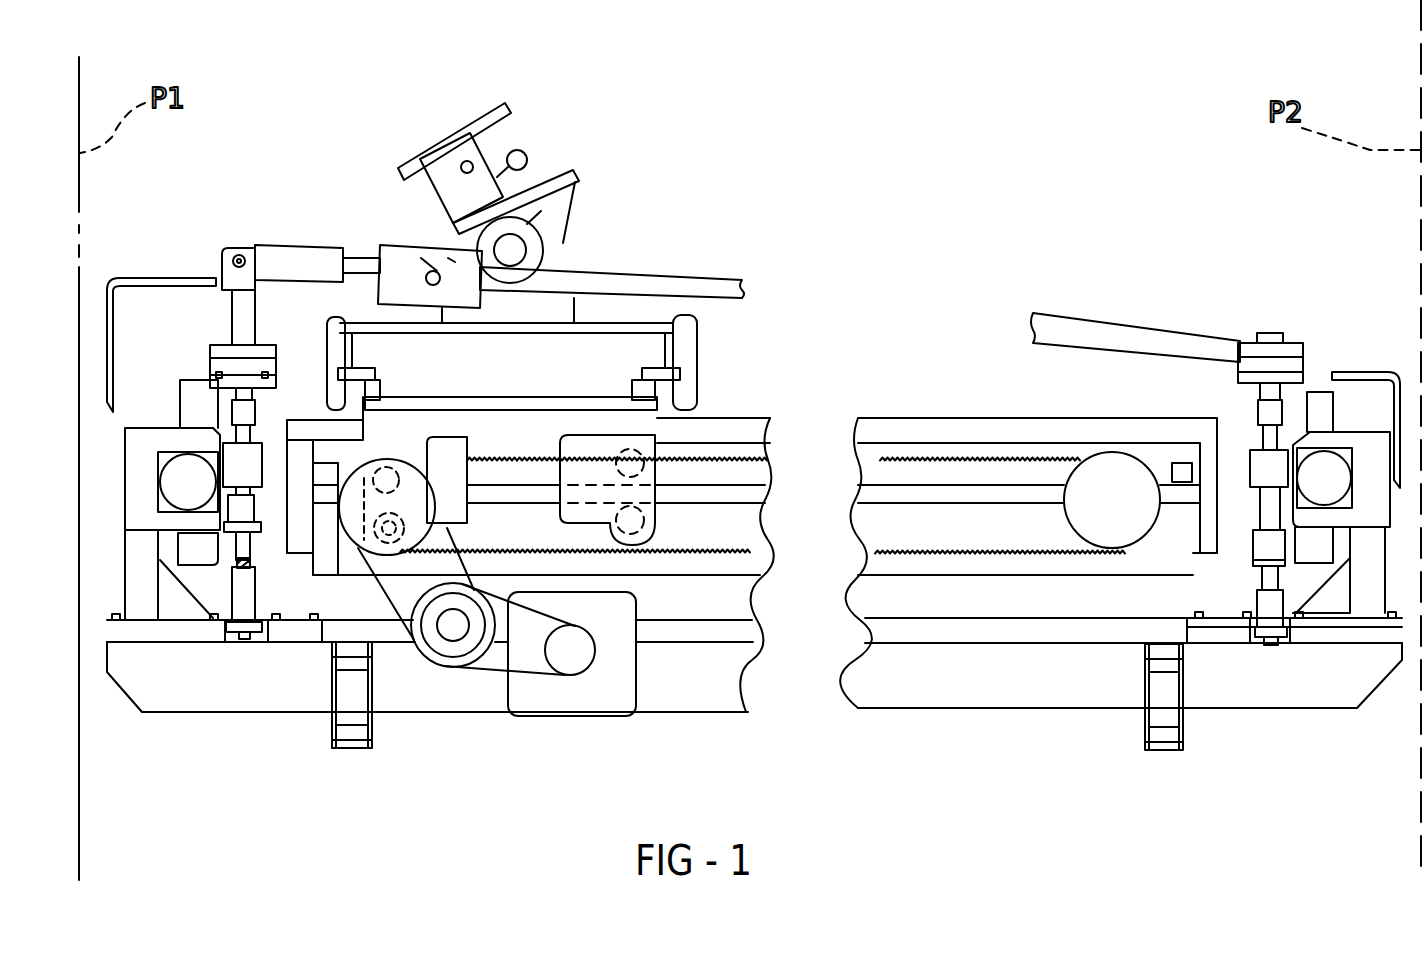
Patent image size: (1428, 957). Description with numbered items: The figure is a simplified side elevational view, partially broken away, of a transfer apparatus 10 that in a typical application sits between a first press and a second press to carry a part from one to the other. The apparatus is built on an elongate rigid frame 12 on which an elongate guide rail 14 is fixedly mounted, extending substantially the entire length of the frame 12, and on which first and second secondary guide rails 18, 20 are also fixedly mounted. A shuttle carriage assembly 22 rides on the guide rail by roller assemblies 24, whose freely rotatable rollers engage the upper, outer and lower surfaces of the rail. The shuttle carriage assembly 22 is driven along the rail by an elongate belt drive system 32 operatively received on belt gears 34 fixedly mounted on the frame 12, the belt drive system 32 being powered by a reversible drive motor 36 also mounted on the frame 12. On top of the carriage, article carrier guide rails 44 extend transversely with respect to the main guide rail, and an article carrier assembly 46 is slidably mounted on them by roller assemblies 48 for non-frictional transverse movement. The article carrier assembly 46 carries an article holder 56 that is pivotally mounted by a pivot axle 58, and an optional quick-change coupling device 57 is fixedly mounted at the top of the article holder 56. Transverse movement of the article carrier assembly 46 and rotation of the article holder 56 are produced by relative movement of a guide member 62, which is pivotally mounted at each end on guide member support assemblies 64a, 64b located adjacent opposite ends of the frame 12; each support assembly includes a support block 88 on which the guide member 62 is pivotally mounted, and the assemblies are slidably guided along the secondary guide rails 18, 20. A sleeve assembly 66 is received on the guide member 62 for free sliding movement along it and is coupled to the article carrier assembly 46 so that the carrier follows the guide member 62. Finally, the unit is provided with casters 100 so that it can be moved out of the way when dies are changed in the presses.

The transfer apparatus 10 is at (940, 148).
The frame 12 is at (692, 700).
The guide rail 14 is at (757, 495).
The first secondary guide rail 18 is at (180, 380).
The second secondary guide rail 20 is at (1393, 318).
The shuttle carriage assembly 22 is at (768, 202).
The roller assembly 24 is at (653, 442).
The belt drive system 32 is at (348, 551).
The belt gear 34 is at (400, 482).
The reversible drive motor 36 is at (550, 720).
The article carrier guide rail 44 is at (673, 378).
The article carrier assembly 46 is at (560, 243).
The roller assembly 48 is at (697, 340).
The article holder 56 is at (578, 176).
The quick-change coupling device 57 is at (470, 135).
The pivot axle 58 is at (512, 238).
The guide member 62 is at (613, 271).
The guide member support assembly 64a is at (215, 343).
The guide member support assembly 64b is at (1283, 343).
The sleeve assembly 66 is at (382, 247).
The support block 88 is at (247, 243).
The caster 100 is at (357, 745).